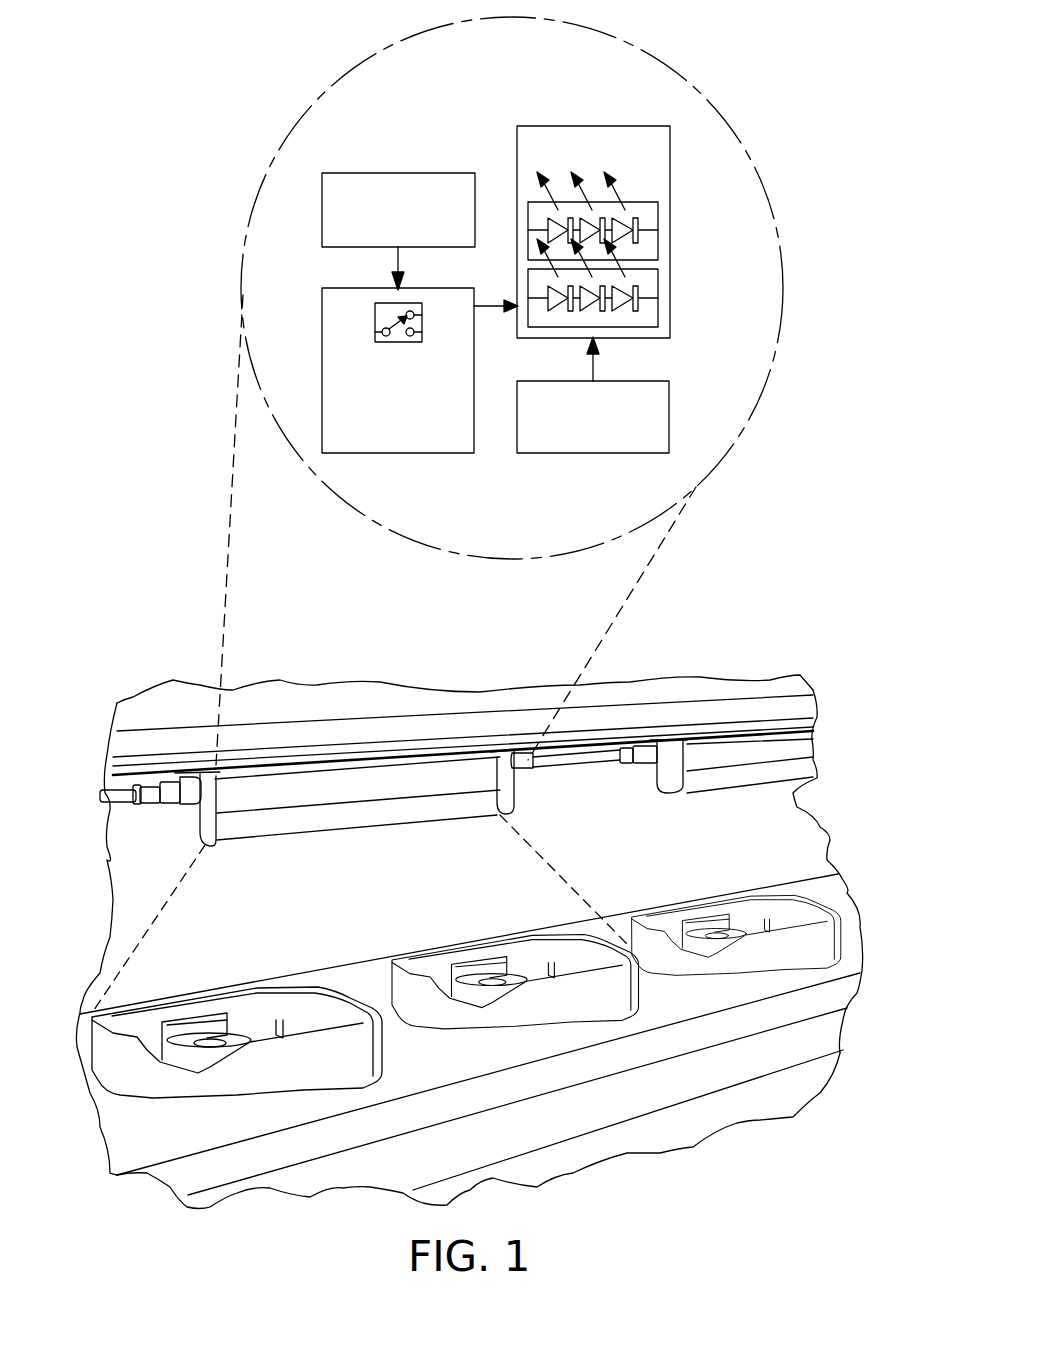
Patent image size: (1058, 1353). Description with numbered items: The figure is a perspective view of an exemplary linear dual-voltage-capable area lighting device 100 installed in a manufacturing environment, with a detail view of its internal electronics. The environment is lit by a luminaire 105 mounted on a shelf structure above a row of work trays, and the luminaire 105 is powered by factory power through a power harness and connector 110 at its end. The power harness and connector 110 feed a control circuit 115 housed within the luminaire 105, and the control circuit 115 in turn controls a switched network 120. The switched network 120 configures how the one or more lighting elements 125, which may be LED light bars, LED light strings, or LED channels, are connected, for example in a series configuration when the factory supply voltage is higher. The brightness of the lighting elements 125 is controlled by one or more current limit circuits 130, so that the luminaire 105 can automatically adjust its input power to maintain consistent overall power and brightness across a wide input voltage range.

The linear dual-voltage-capable area lighting device 100 is at (203, 95).
The luminaire 105 is at (320, 820).
The power harness and connector 110 is at (115, 787).
The control circuit 115 is at (398, 173).
The switched network 120 is at (322, 370).
The lighting elements 125 is at (671, 263).
The current limit circuits 130 is at (670, 415).